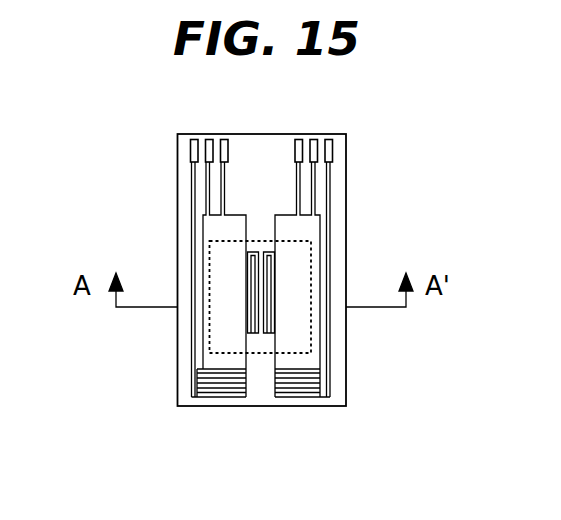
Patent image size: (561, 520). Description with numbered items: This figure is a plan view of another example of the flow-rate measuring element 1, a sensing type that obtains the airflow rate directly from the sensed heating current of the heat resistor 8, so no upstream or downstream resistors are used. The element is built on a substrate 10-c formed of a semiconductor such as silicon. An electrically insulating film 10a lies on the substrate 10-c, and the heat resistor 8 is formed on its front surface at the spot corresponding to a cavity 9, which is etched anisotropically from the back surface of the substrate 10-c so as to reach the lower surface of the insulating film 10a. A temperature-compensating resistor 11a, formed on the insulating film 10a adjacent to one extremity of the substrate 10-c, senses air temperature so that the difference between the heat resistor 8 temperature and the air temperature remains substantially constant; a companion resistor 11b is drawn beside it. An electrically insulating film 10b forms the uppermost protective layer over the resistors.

The measuring element 1 is at (177, 242).
The substrate 10-c is at (191, 190).
The electrically insulating film 10a is at (293, 293).
The electrically insulating film 10b is at (297, 279).
The cavity 9 is at (293, 263).
The heat resistor 8 is at (266, 310).
The temperature-compensating resistor 11a is at (218, 386).
The second heater / resistor 11b is at (300, 386).